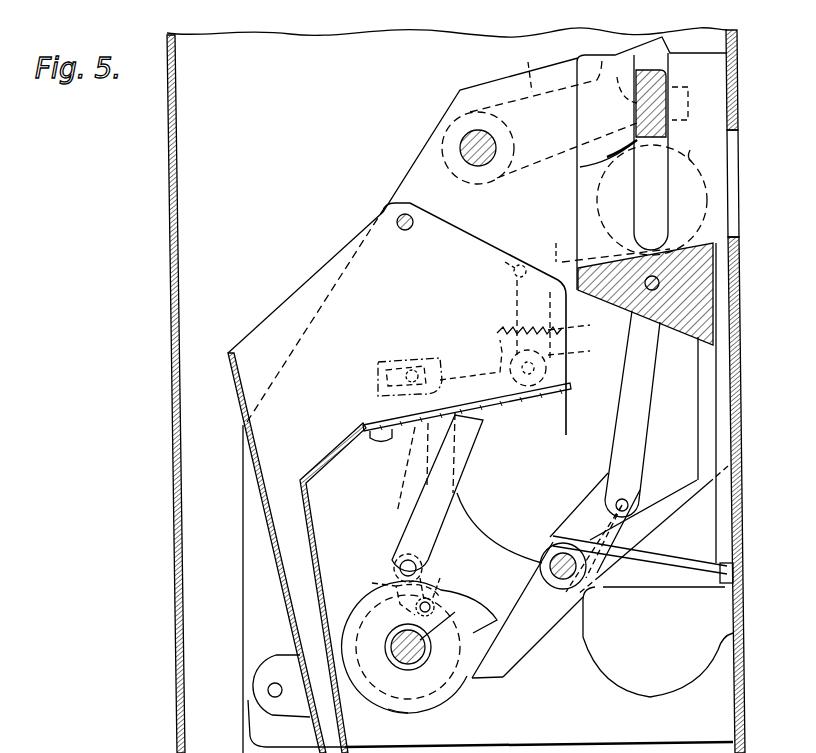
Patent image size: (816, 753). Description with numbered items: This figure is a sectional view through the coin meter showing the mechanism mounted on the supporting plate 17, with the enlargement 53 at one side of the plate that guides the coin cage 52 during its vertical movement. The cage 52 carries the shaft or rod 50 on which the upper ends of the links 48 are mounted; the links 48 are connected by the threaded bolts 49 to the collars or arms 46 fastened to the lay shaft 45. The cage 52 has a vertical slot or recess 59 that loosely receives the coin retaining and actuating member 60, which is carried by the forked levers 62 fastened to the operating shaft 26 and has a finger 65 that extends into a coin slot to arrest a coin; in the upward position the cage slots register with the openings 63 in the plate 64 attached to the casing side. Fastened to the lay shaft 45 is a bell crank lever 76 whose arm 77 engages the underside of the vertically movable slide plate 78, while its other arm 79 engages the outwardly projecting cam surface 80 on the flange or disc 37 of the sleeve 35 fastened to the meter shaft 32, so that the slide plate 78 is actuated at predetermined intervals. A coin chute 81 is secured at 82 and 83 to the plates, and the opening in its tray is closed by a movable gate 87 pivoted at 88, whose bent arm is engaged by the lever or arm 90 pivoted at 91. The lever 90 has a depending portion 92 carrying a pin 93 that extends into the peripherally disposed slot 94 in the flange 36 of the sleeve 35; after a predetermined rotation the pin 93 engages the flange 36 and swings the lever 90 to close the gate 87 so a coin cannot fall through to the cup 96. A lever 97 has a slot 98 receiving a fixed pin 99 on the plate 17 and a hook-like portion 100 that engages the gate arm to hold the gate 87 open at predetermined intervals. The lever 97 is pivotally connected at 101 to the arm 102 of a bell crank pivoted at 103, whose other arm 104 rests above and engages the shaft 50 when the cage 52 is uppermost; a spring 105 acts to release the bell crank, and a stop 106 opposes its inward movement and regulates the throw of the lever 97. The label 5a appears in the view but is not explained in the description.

The supporting plate 17 is at (243, 606).
The openings 63 is at (738, 183).
The coin chute 81 is at (236, 394).
The operating shaft 26 is at (460, 140).
The forked levers 62 is at (527, 68).
The coin cage 52 is at (577, 206).
The coin retaining and actuating member 60 is at (634, 104).
The slot or recess 59 is at (666, 180).
The finger 65 is at (580, 167).
The lever 5a is at (689, 146).
The chute securing point 82 is at (398, 218).
The shaft or rod 50 is at (655, 318).
The plate 64 is at (738, 243).
The arm of bell crank 104 is at (550, 247).
The bell crank pivot 103 is at (497, 264).
The spring 105 is at (497, 312).
The arm of bell crank lever 102 is at (579, 326).
The pivotal connection 101 is at (579, 352).
The stop 106 is at (515, 368).
The fixed pin 99 is at (396, 370).
The slot 98 is at (418, 370).
The lever 97 is at (445, 362).
The gate pivot 88 is at (470, 410).
The movable gate 87 is at (526, 396).
The hook-like portion 100 is at (380, 440).
The lever or arm 90 is at (466, 458).
The collars or arms 46 is at (576, 518).
The links 48 is at (648, 410).
The threaded bolts 49 is at (628, 502).
The enlargement 53 is at (706, 408).
The lay shaft 45 is at (558, 552).
The slide plate 78 is at (736, 541).
The arm of bell crank lever 77 is at (735, 575).
The cup 96 is at (720, 651).
The bell crank lever 76 is at (518, 652).
The arm of bell crank 79 is at (490, 678).
The cam surface 80 is at (487, 603).
The flange or collar 36 is at (452, 685).
The flange or disc 37 is at (388, 709).
The meter shaft 32 is at (398, 664).
The sleeve 35 is at (446, 619).
The lever pivot 91 is at (394, 565).
The depending portion 92 is at (440, 578).
The pin 93 is at (433, 602).
The peripherally disposed slot 94 is at (374, 584).
The chute securing point 83 is at (270, 694).